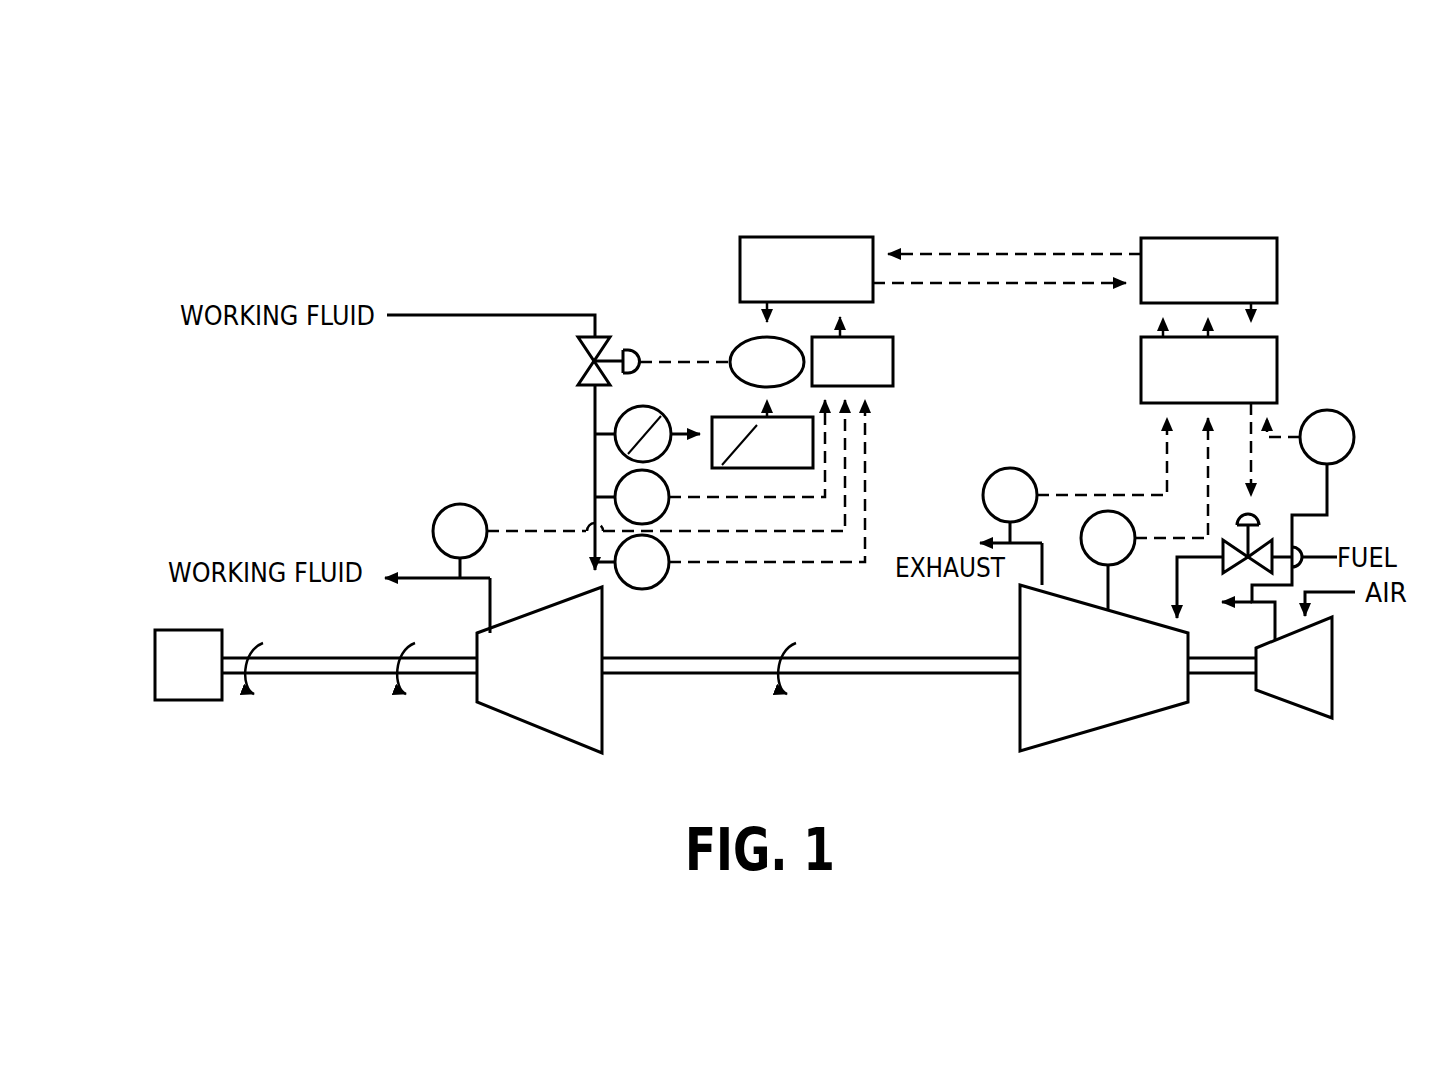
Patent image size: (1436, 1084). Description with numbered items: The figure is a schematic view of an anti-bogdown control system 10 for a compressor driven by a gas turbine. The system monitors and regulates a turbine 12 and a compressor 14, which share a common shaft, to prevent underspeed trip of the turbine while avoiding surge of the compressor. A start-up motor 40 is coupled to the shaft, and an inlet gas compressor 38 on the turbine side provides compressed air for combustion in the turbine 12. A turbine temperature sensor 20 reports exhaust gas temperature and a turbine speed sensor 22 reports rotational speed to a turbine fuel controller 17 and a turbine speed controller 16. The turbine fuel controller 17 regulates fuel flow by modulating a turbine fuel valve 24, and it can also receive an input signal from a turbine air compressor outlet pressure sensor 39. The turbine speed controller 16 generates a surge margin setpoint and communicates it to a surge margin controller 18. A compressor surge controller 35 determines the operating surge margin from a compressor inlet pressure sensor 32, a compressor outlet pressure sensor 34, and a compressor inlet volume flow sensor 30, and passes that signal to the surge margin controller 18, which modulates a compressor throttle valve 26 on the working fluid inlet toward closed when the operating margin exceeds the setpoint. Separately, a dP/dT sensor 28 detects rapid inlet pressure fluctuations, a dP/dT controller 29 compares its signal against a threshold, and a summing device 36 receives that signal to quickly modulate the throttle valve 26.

The anti-bogdown control system 10 is at (532, 184).
The turbine 12 is at (1077, 727).
The compressor 14 is at (540, 725).
The turbine speed controller 16 is at (1237, 243).
The turbine fuel controller 17 is at (1141, 383).
The surge margin controller 18 is at (847, 245).
The turbine temperature sensor 20 is at (1025, 468).
The turbine speed sensor 22 is at (1112, 511).
The turbine fuel valve 24 is at (1262, 545).
The compressor throttle valve 26 is at (578, 357).
The rate of change in pressure (dP/dT) sensor 28 is at (610, 416).
The rate of change of pressure (dP/dT) controller 29 is at (718, 417).
The compressor inlet volume flow sensor 30 is at (610, 482).
The compressor inlet pressure sensor 32 is at (658, 590).
The compressor outlet pressure sensor 34 is at (455, 505).
The compressor surge controller 35 is at (893, 368).
The summing device 36 is at (735, 355).
The inlet gas compressor 38 is at (1292, 705).
The turbine air compressor outlet pressure sensor 39 is at (1342, 415).
The start-up motor 40 is at (188, 700).